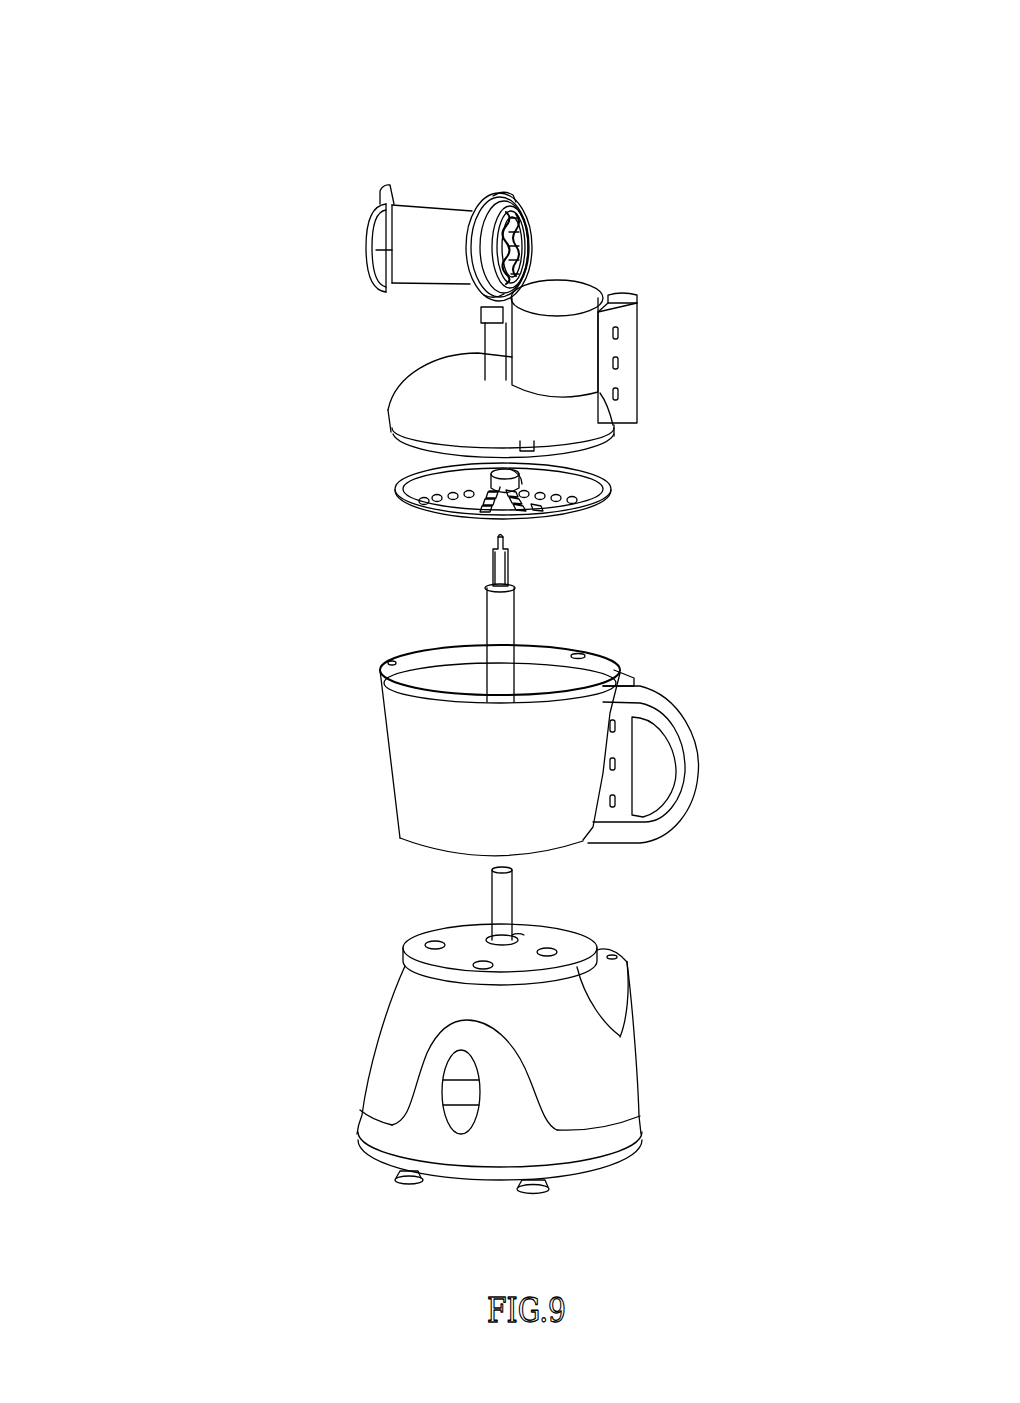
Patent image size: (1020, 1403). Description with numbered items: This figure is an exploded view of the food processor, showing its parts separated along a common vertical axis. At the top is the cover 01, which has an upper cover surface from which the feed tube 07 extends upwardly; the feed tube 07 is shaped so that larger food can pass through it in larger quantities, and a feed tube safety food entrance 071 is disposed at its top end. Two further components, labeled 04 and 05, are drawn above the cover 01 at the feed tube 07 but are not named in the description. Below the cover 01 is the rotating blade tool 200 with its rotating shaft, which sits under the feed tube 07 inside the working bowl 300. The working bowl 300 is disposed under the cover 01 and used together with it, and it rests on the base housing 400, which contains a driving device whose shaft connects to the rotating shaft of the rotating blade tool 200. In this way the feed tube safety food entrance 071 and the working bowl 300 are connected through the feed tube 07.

The cover 01 is at (448, 410).
The grater ring 04 is at (505, 197).
The cutter tube 05 is at (442, 222).
The feed tube 07 is at (578, 370).
The feed tube safety food entrance 071 is at (573, 277).
The rotating blade tool 200 is at (420, 513).
The working bowl 300 is at (462, 778).
The base housing 400 is at (412, 1045).